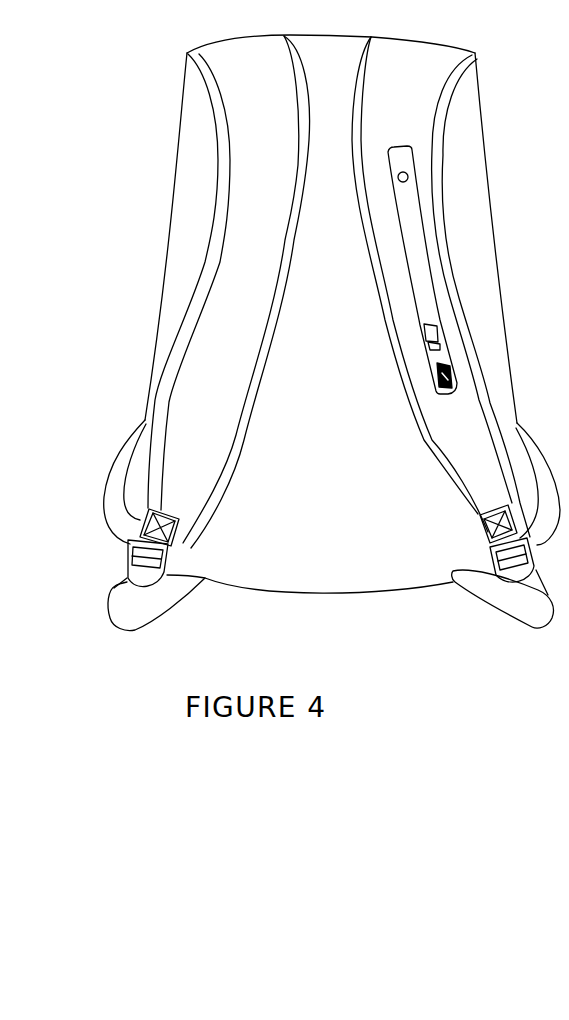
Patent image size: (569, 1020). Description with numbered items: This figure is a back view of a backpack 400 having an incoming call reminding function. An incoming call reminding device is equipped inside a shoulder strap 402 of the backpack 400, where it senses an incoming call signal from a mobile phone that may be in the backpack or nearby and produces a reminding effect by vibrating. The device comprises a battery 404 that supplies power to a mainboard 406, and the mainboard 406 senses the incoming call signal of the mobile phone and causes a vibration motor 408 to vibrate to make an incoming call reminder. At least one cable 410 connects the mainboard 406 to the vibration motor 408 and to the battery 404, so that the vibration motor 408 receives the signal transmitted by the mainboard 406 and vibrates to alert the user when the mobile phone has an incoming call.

The backpack 400 is at (187, 110).
The shoulder strap 402 is at (389, 271).
The battery 404 is at (432, 331).
The mainboard 406 is at (438, 388).
The vibration motor 408 is at (408, 176).
The cable 410 is at (418, 281).